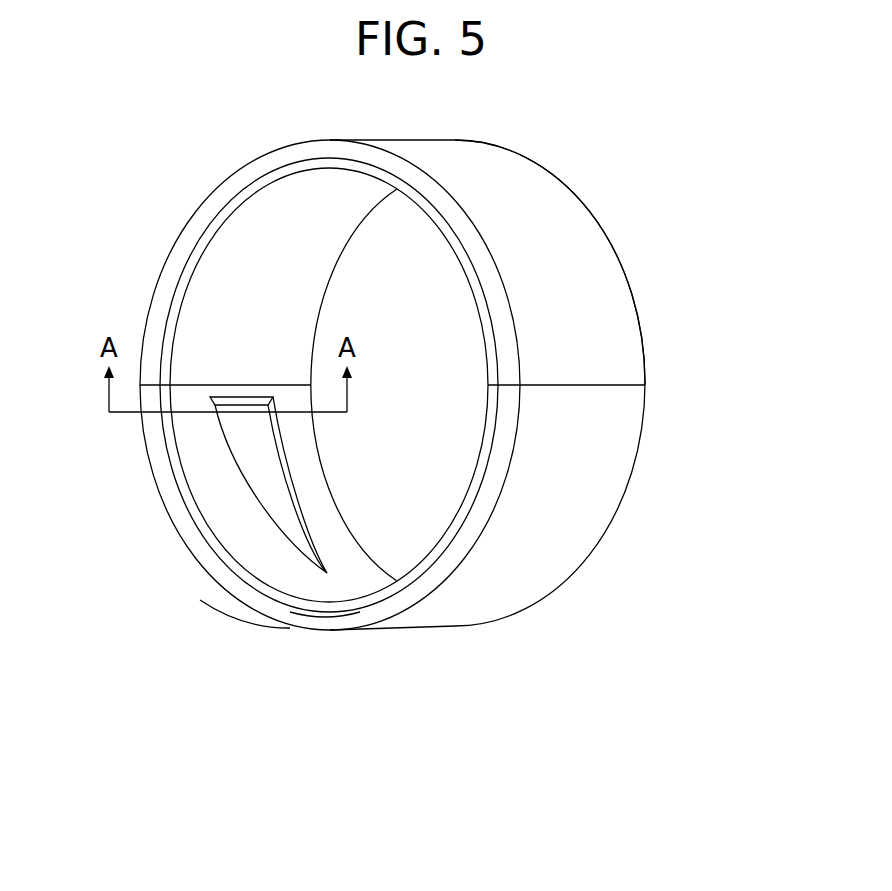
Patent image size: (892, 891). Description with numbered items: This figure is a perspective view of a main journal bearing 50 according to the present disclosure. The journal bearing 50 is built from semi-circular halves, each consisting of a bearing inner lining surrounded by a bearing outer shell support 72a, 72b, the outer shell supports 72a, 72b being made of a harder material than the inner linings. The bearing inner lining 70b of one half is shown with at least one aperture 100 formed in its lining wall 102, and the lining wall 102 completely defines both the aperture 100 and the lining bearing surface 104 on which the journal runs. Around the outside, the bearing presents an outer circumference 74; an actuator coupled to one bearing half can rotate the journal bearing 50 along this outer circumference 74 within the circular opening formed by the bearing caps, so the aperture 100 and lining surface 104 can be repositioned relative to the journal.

The journal bearing 50 is at (130, 156).
The bearing outer shell support 72a is at (488, 241).
The bearing outer shell support 72b is at (499, 326).
The bearing inner lining 70b is at (490, 486).
The lining bearing surface 104 is at (223, 313).
The aperture 100 is at (265, 485).
The lining wall 102 is at (323, 607).
The outer circumference 74 is at (225, 615).